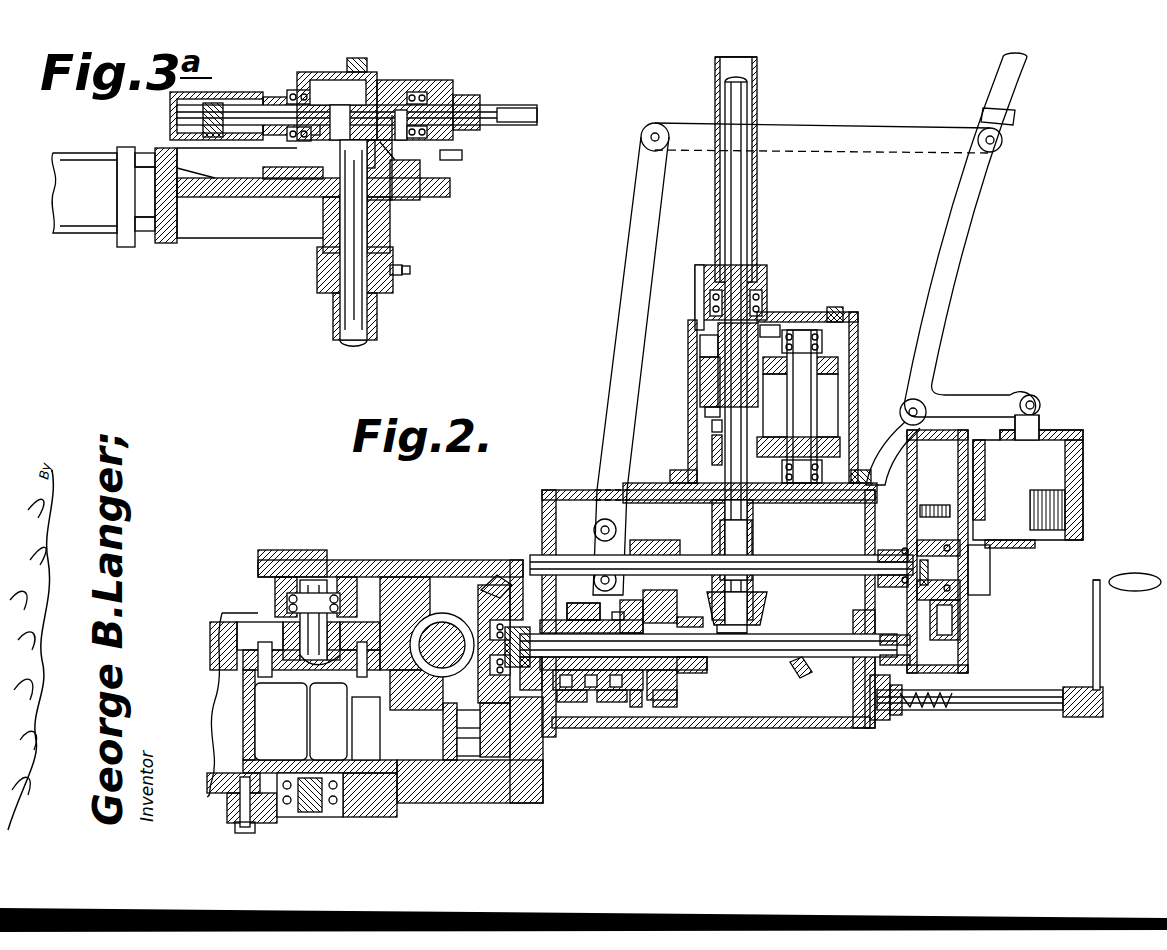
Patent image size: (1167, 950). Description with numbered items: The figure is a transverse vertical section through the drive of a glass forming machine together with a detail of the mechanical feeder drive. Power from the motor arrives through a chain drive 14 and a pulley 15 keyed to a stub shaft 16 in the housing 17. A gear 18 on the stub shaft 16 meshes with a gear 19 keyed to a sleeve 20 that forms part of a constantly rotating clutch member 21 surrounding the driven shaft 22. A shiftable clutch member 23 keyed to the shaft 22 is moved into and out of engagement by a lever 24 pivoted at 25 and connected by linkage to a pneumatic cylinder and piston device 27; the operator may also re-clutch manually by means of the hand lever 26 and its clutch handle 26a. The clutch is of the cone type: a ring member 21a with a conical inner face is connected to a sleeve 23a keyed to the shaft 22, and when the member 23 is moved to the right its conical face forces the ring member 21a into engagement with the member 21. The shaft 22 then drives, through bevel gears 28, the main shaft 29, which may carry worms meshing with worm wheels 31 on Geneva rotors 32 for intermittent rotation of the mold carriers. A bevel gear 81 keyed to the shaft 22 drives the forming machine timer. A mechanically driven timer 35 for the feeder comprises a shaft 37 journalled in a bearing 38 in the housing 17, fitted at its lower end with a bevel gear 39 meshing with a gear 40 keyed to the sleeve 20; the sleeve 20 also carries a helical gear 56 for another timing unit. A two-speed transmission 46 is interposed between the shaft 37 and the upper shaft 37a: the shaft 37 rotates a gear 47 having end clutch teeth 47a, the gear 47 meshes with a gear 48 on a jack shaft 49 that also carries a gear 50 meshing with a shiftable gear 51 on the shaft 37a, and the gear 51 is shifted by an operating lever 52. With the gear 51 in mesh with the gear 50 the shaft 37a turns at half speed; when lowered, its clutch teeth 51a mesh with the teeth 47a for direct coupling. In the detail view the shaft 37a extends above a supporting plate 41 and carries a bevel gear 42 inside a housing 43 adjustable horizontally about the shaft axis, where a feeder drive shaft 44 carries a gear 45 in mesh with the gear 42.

In FIG. 2, the chain drive 14 is at (935, 503).
In FIG. 2, the pulley 15 is at (960, 620).
In FIG. 2, the stub shaft 16 is at (828, 562).
In FIG. 2, the housing 17 is at (657, 490).
In FIG. 2, the gear 18 is at (682, 545).
In FIG. 2, the gear 19 is at (660, 690).
In FIG. 2, the sleeve 20 is at (685, 680).
In FIG. 2, the constantly rotating clutch member 21 is at (620, 679).
In FIG. 2, the ring member 21a is at (612, 600).
In FIG. 2, the driven shaft 22 is at (605, 660).
In FIG. 2, the shiftable clutch member 23 is at (630, 689).
In FIG. 2, the sleeve 23a is at (666, 690).
In FIG. 2, the lever 24 is at (606, 462).
In FIG. 2, the pivot 25 is at (595, 545).
In FIG. 2, the hand lever 26 is at (955, 140).
In FIG. 2, the clutch handle 26a is at (1015, 80).
In FIG. 2, the pneumatic cylinder and piston device 27 is at (1070, 490).
In FIG. 2, the bevel gears 28 is at (495, 585).
In FIG. 2, the main shaft 29 is at (442, 622).
In FIG. 2, the worm wheels 31 is at (405, 615).
In FIG. 2, the Geneva rotors 32 is at (400, 700).
In FIG. 2, the mechanically driven timer 35 is at (757, 245).
In FIG. 2, the shaft 37 is at (753, 525).
In FIG. 3A, the shaft 37a is at (365, 308).
In FIG. 2, the shaft 37a is at (740, 207).
In FIG. 2, the bearing 38 is at (755, 545).
In FIG. 2, the bevel gear 39 is at (768, 600).
In FIG. 2, the gear 40 is at (717, 688).
In FIG. 3A, the supporting plate 41 is at (262, 200).
In FIG. 3A, the bevel gear 42 is at (390, 165).
In FIG. 3A, the housing 43 is at (392, 85).
In FIG. 3A, the feeder drive shaft 44 is at (268, 105).
In FIG. 3A, the gear 45 is at (418, 92).
In FIG. 2, the transmission 46 is at (838, 390).
In FIG. 2, the gear 47 is at (710, 447).
In FIG. 2, the clutch teeth 47a is at (712, 428).
In FIG. 2, the gear 48 is at (832, 437).
In FIG. 2, the jack shaft 49 is at (805, 395).
In FIG. 2, the gear 50 is at (830, 352).
In FIG. 2, the shiftable gear 51 is at (705, 362).
In FIG. 2, the clutch teeth 51a is at (708, 410).
In FIG. 2, the operating lever 52 is at (700, 380).
In FIG. 2, the helical gear 56 is at (750, 625).
In FIG. 2, the bevel gear 81 is at (805, 683).